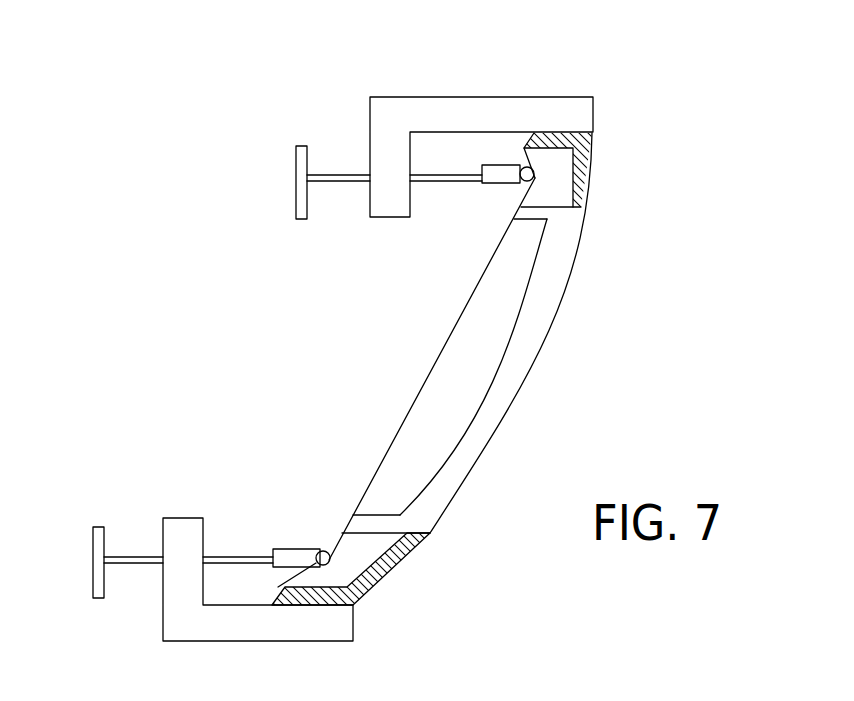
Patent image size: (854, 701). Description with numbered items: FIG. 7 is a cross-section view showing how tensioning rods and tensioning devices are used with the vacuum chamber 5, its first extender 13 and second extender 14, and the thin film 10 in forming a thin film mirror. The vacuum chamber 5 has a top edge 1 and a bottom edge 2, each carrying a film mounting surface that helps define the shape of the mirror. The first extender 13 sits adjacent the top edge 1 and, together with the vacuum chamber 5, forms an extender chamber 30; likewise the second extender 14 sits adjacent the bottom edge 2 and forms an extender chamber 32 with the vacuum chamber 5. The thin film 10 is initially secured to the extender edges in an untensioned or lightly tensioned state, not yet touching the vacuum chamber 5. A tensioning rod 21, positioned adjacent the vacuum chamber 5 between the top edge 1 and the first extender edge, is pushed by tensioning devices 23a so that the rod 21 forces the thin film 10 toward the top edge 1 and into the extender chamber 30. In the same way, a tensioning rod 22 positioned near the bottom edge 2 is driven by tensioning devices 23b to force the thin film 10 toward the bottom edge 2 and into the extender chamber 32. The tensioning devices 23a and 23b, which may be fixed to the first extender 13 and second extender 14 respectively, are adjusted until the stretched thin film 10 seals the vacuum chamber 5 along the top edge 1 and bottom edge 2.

The top edge 1 is at (537, 231).
The bottom edge 2 is at (345, 502).
The vacuum chamber 5 is at (546, 377).
The thin film 10 is at (549, 166).
The first extender 13 is at (622, 164).
The second extender 14 is at (386, 603).
The tensioning rod 21 is at (515, 189).
The tensioning rod 22 is at (304, 537).
The tensioning devices 23a is at (357, 112).
The tensioning devices 23b is at (151, 617).
The extender chamber 30 is at (570, 157).
The extender chamber 32 is at (384, 541).